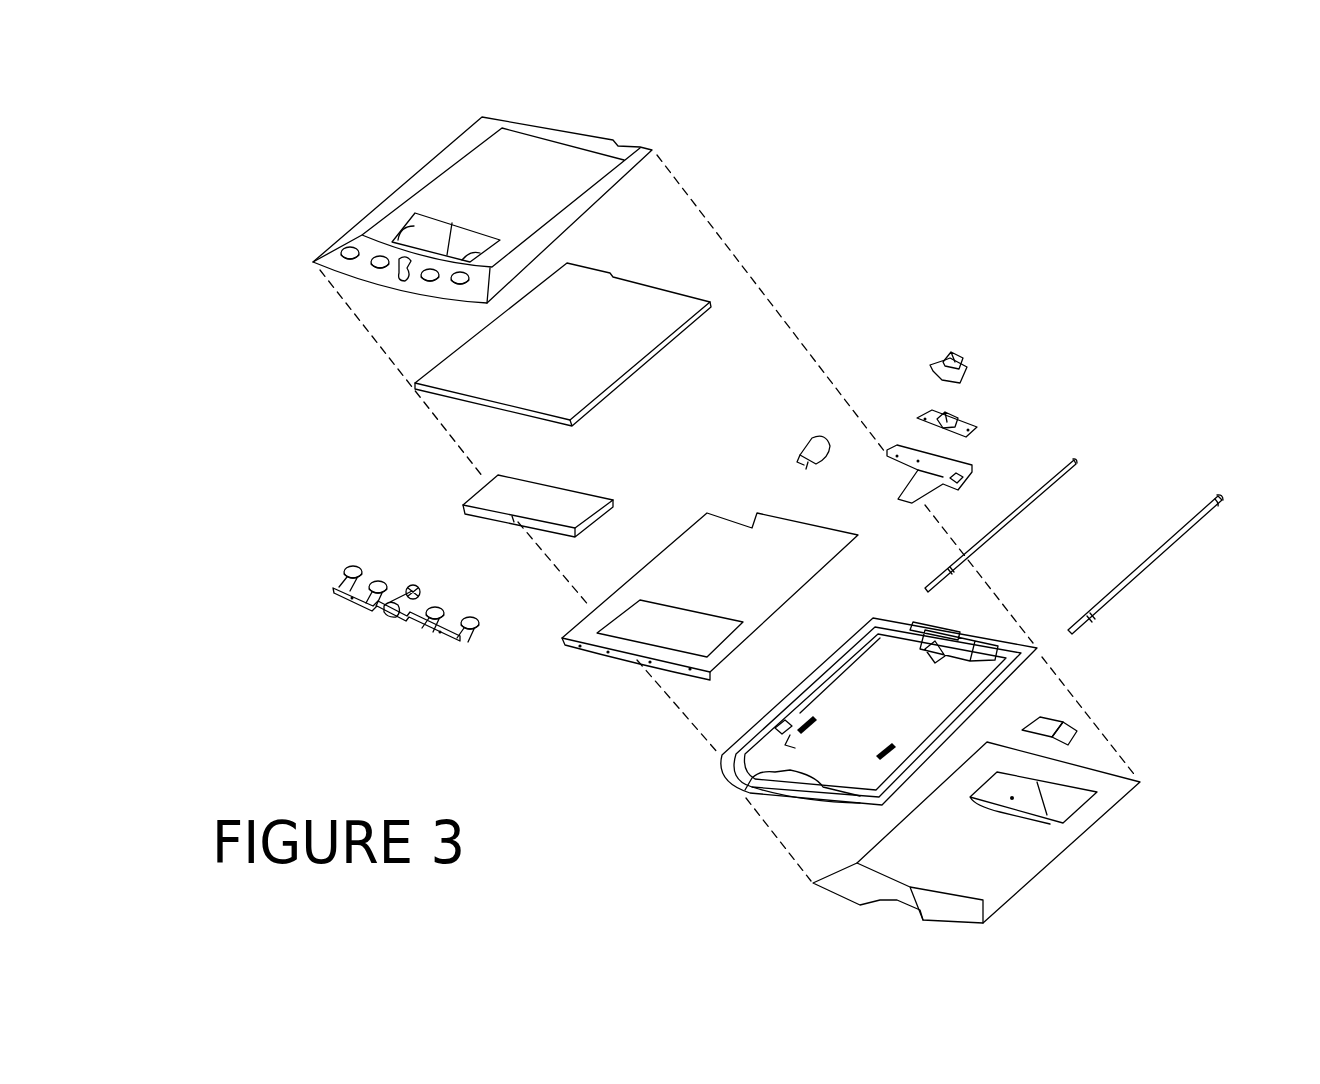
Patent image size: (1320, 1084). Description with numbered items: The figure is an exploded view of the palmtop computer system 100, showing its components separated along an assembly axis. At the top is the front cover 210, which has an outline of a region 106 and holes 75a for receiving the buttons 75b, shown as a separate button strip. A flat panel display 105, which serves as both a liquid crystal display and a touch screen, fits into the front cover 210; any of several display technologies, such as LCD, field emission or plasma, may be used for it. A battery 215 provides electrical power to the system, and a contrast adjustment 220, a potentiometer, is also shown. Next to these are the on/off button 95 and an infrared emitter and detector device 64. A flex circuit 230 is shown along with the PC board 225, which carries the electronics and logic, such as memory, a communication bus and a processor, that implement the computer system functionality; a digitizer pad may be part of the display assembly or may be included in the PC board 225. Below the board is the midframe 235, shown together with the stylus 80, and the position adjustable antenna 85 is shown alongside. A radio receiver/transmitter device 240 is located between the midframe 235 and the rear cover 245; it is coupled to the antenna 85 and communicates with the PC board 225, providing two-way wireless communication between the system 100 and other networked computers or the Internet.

The palmtop computer system 100 is at (185, 111).
The front cover 210 is at (657, 149).
The region 106 is at (415, 232).
The holes 75a is at (343, 249).
The flat panel display 105 is at (683, 292).
The battery 215 is at (470, 488).
The contrast adjustment 220 is at (810, 437).
The PC board 225 is at (587, 612).
The buttons 75b is at (340, 565).
The on/off button 95 is at (948, 349).
The infrared emitter and detector device 64 is at (976, 421).
The flex circuit 230 is at (969, 464).
The position adjustable antenna 85 is at (1078, 459).
The stylus 80 is at (1196, 541).
The midframe 235 is at (1022, 689).
The radio receiver/transmitter device 240 is at (1084, 731).
The rear cover 245 is at (1089, 839).